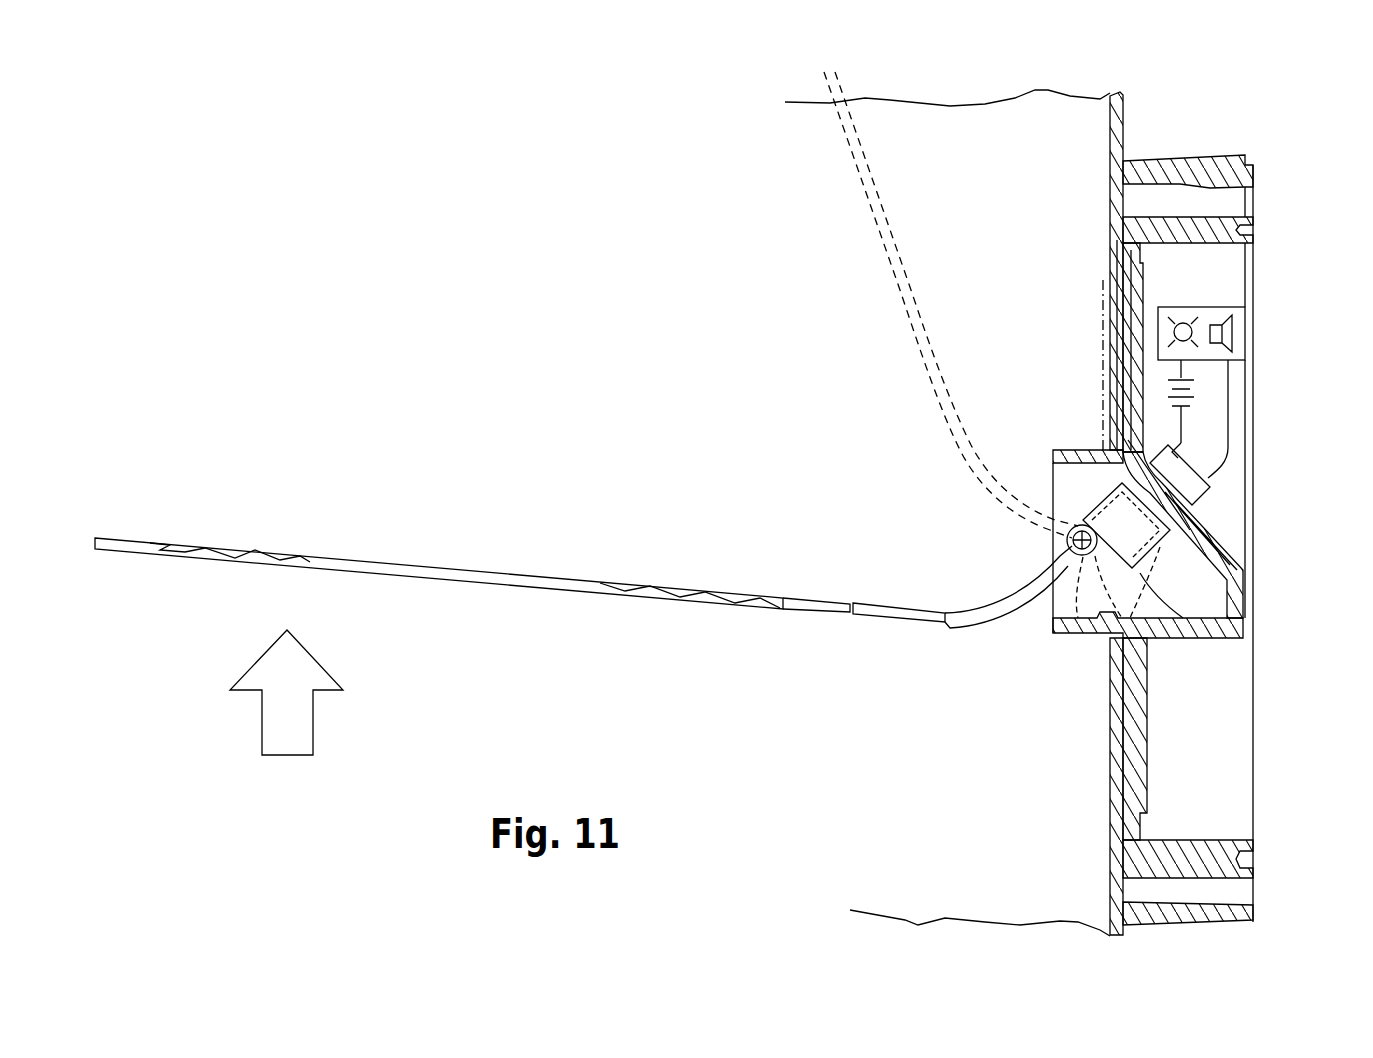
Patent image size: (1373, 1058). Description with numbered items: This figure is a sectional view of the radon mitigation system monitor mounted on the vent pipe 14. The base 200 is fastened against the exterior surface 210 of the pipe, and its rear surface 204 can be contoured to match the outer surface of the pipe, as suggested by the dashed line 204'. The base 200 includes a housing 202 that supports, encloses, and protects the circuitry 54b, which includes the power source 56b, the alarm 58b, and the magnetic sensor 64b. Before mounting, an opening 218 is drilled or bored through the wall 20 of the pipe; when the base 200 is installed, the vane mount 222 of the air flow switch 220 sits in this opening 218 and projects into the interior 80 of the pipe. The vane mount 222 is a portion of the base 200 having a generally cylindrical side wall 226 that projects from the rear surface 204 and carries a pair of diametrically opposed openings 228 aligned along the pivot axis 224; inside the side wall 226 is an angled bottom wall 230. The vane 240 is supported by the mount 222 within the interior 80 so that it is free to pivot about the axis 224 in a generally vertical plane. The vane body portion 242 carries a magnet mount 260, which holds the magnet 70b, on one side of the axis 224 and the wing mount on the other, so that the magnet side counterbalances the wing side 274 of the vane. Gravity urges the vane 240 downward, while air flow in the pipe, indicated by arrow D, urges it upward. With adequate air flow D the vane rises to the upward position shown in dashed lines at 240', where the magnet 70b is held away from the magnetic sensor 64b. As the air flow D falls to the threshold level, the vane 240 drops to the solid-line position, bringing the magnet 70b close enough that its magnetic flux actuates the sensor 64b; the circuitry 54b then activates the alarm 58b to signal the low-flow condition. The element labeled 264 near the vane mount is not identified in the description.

The vent pipe 14 is at (1113, 237).
The wall of the pipe 20 is at (1105, 410).
The circuitry 54b is at (1270, 412).
The power source 56b is at (1196, 396).
The alarm 58b is at (1240, 318).
The magnetic sensor 64b is at (1200, 490).
The magnet 70b is at (1150, 553).
The interior of the pipe 80 is at (934, 196).
The base 200 is at (1205, 228).
The housing 202 is at (1208, 808).
The rear surface of the base 204 is at (1079, 347).
The dashed line indicating contoured rear surface 204' is at (1061, 363).
The exterior surface of the vent pipe 210 is at (1124, 102).
The opening 218 is at (1110, 645).
The air flow switch 220 is at (1003, 527).
The vane mount 222 is at (1093, 456).
The axis 224 is at (1068, 643).
The cylindrical side wall 226 is at (1058, 623).
The diametrically opposed openings 228 is at (1065, 565).
The angled bottom wall 230 is at (1205, 535).
The vane 240 is at (583, 567).
The upward position of the vane 240' is at (935, 305).
The vane body portion 242 is at (958, 628).
The magnet mount 260 is at (1190, 628).
The pivot direction 264 is at (1082, 487).
The wing side of the vane 274 is at (893, 648).
The arrow indicating air flow D is at (287, 713).